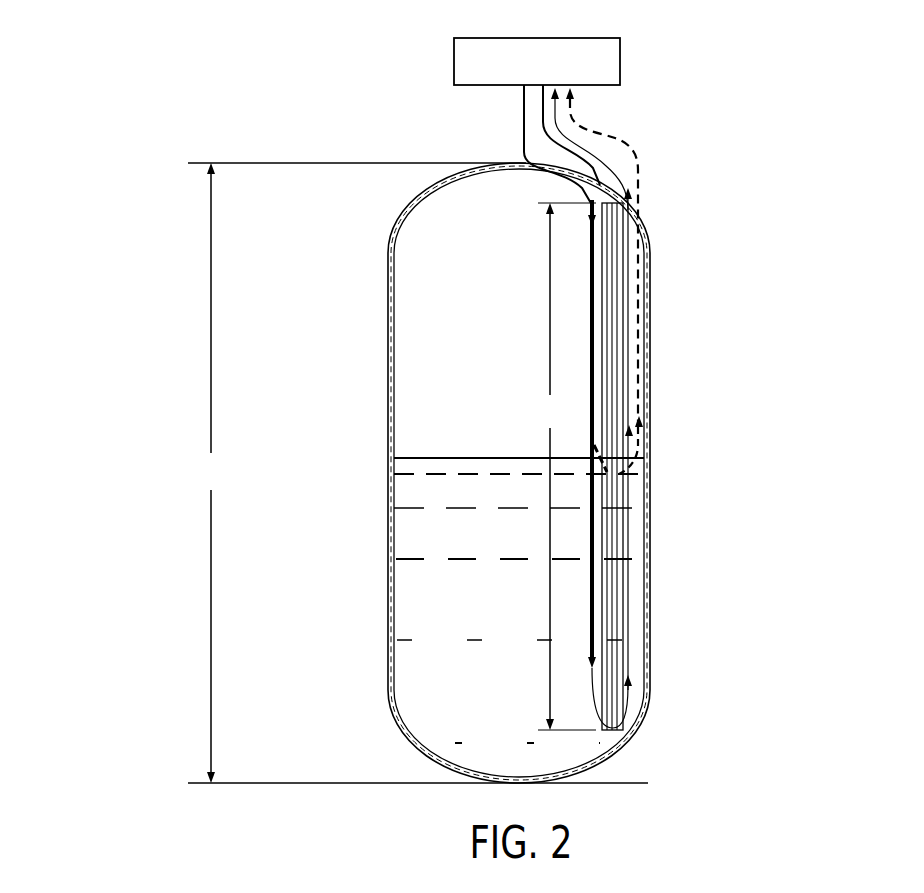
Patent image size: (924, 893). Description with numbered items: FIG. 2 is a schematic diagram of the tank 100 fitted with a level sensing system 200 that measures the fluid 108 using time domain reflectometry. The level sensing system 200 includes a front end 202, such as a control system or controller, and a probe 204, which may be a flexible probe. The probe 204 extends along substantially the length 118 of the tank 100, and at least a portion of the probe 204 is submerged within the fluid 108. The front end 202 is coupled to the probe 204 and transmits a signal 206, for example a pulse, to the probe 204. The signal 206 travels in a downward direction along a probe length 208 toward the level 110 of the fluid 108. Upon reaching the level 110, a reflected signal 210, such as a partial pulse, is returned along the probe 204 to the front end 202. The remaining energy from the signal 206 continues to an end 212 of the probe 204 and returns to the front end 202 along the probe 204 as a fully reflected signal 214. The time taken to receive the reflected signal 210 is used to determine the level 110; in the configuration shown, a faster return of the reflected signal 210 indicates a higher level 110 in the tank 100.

The tank 100 is at (248, 97).
The fluid 108 is at (420, 612).
The level 110 is at (421, 456).
The length 118 is at (418, 473).
The level sensing system 200 is at (808, 69).
The front end 202 is at (454, 62).
The probe 204 is at (632, 296).
The signal 206 is at (583, 188).
The probe length 208 is at (563, 466).
The reflected signal 210 is at (640, 446).
The end 212 is at (633, 746).
The fully reflected signal 214 is at (623, 698).